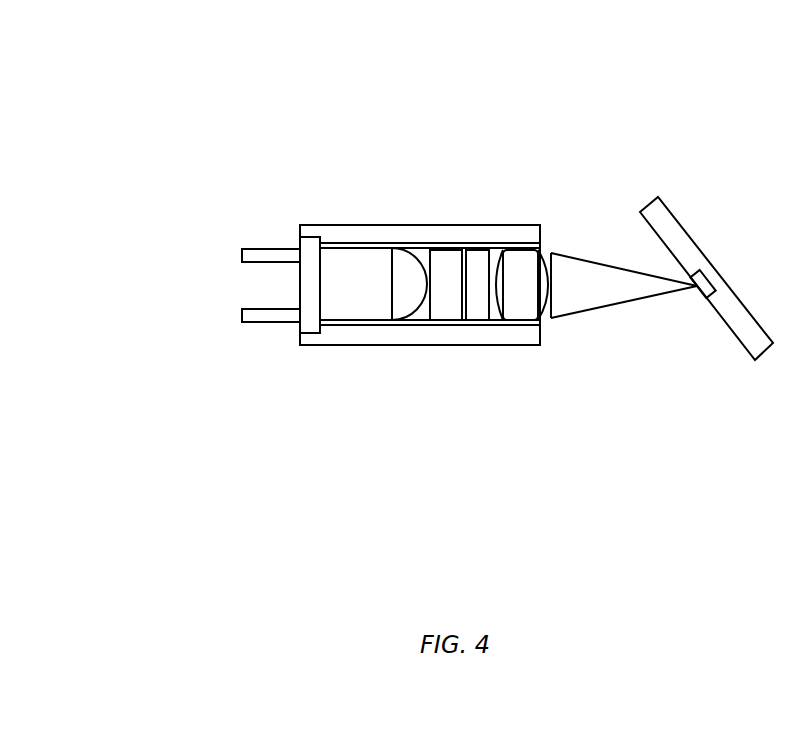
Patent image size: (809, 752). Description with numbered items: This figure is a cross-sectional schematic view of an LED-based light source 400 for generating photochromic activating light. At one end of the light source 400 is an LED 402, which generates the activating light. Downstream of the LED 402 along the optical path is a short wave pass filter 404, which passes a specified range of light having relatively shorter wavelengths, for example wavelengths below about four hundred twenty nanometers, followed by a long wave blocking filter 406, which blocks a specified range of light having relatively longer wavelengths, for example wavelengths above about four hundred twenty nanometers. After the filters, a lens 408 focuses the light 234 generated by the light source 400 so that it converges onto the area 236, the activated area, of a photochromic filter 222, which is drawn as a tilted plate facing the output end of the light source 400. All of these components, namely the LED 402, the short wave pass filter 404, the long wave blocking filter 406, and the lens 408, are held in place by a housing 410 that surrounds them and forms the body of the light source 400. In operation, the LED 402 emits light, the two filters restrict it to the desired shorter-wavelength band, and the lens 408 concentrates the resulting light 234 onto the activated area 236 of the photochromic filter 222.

The light source 400 is at (332, 287).
The LED 402 is at (333, 283).
The short wave pass filter 404 is at (445, 263).
The long wave blocking filter 406 is at (473, 258).
The lens 408 is at (518, 255).
The housing 410 is at (340, 335).
The light 234 is at (650, 285).
The area 236 is at (700, 290).
The photochromic filter 222 is at (748, 342).